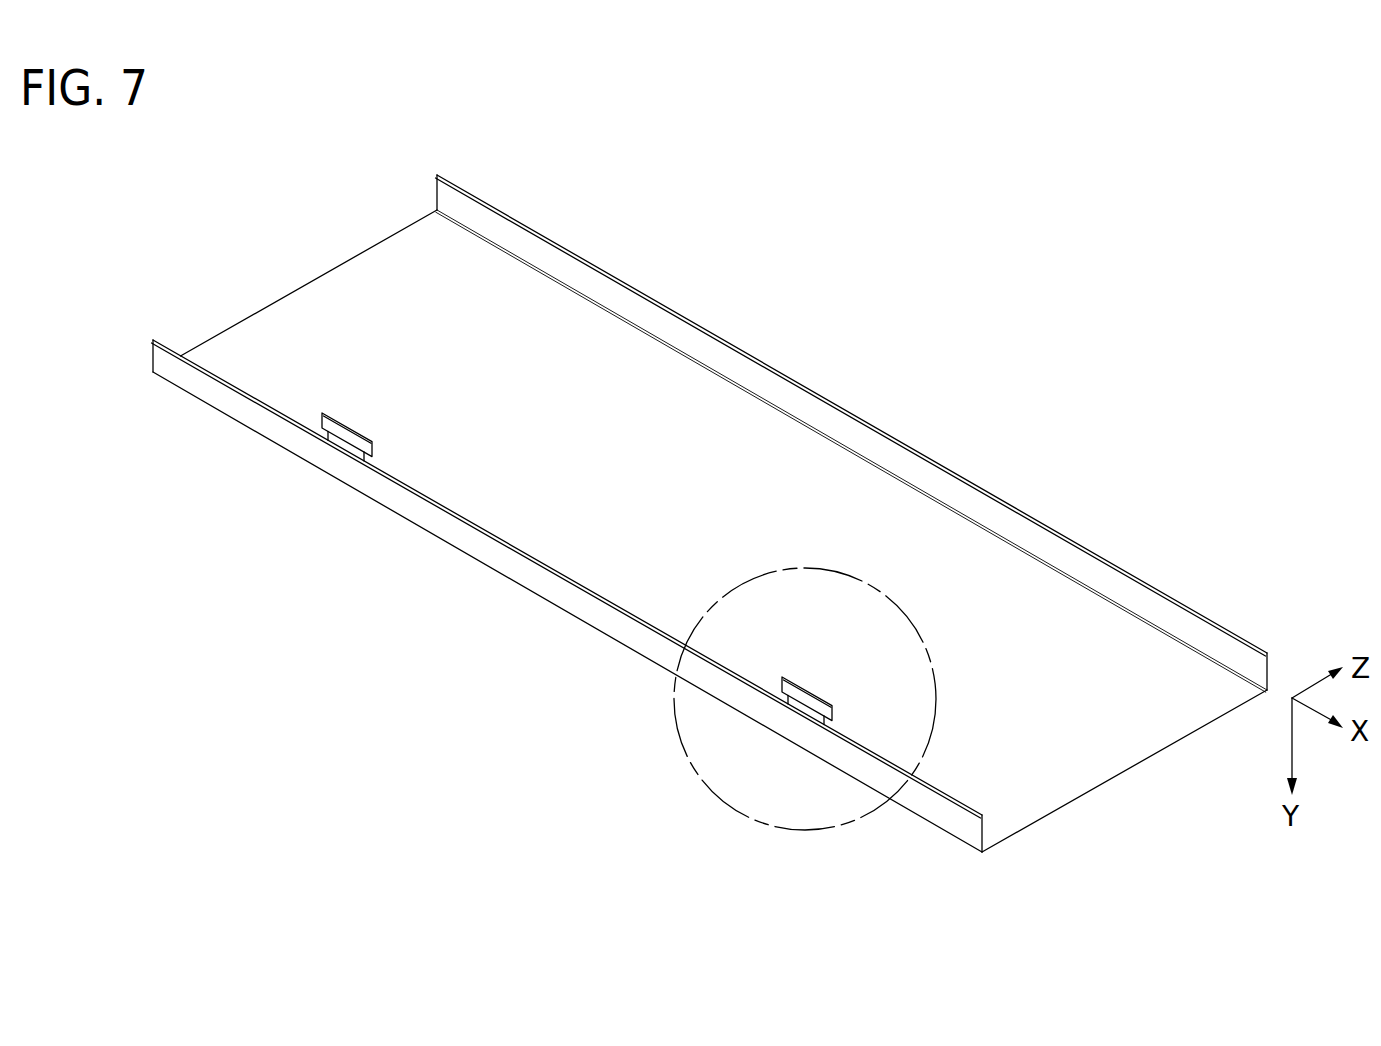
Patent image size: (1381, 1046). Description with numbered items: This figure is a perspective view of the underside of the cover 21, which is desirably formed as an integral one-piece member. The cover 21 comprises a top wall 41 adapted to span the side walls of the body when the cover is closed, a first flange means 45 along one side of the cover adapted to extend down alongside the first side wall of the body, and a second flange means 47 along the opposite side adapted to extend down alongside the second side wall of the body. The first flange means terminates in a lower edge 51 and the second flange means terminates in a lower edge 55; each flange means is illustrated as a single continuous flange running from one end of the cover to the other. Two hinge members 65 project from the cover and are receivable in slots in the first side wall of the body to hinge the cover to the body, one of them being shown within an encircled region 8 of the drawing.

The cover 21 is at (669, 487).
The top wall 41 is at (355, 253).
The first flange means 45 is at (527, 565).
The second flange means 47 is at (437, 192).
The lower edge 51 is at (170, 346).
The lower edge 55 is at (832, 407).
The hinge members 65 is at (362, 416).
The enlarged region 8 is at (933, 670).